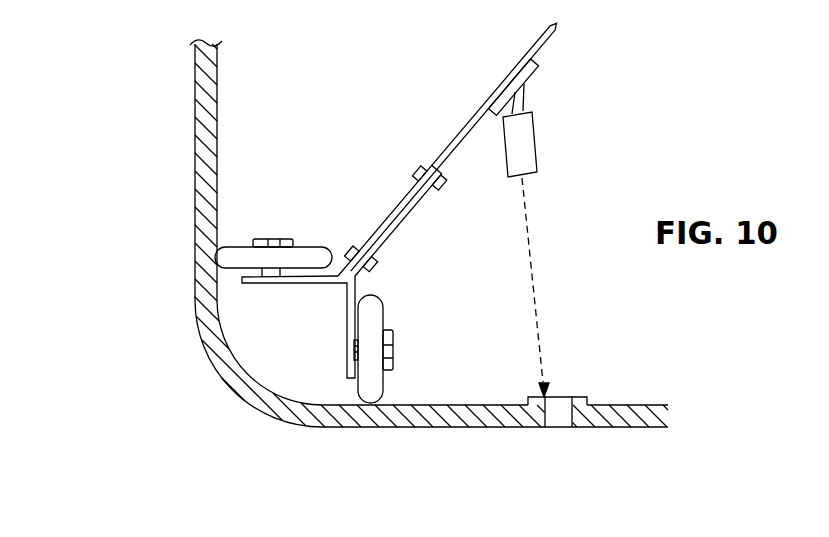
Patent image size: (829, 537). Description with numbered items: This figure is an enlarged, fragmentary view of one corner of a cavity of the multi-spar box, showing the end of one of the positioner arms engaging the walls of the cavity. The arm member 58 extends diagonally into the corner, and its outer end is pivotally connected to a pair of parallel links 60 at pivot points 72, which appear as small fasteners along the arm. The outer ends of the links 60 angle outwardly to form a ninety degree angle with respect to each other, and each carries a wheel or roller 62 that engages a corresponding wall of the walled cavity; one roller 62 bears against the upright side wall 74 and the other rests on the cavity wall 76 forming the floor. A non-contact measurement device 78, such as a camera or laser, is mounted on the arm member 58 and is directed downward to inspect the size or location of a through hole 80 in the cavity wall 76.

The arm 58 is at (475, 113).
The link 60 is at (382, 224).
The roller 62 is at (243, 262).
The pivot point 72 is at (415, 166).
The side wall 74 is at (207, 112).
The cavity wall 76 is at (455, 428).
The non-contact measurement device 78 is at (523, 138).
The through hole 80 is at (563, 397).